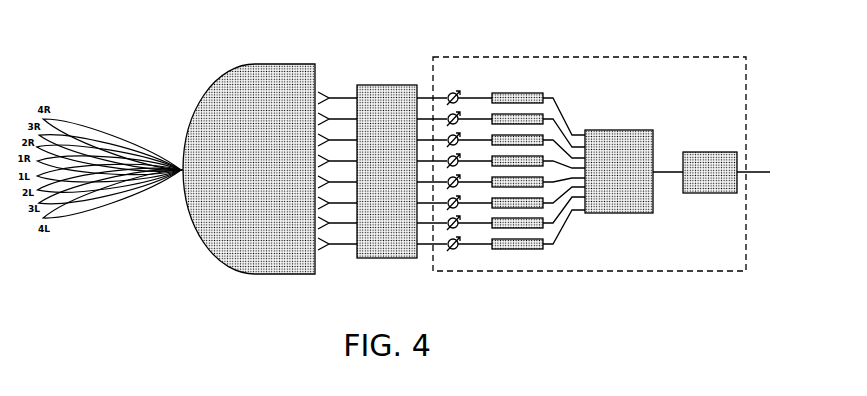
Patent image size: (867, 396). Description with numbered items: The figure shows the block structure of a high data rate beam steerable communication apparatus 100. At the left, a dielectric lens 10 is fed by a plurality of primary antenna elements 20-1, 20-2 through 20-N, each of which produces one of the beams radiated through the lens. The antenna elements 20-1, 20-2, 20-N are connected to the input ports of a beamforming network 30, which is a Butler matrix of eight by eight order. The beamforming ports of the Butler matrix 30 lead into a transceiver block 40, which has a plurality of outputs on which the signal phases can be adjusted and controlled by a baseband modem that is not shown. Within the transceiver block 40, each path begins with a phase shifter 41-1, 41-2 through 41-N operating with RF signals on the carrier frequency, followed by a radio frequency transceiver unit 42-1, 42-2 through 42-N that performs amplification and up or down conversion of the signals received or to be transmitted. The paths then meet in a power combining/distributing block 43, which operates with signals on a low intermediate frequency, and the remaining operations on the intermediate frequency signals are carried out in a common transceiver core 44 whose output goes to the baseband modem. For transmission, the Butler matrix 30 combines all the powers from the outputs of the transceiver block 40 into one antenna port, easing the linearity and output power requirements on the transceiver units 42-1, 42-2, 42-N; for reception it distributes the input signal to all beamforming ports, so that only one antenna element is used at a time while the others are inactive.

The communication apparatus 100 is at (450, 26).
The dielectric lens 10 is at (249, 169).
The antenna element 20-1 is at (337, 93).
The antenna element 20-2 is at (337, 114).
The antenna element 20-N is at (337, 239).
The beamforming network 30 is at (383, 85).
The transceiver block 40 is at (589, 164).
The phase shifter 41-1 is at (467, 96).
The phase shifter 41-2 is at (467, 117).
The phase shifter 41-N is at (467, 242).
The radio frequency transceiver unit 42-1 is at (517, 98).
The radio frequency transceiver unit 42-2 is at (517, 119).
The radio frequency transceiver unit 42-N is at (517, 244).
The power combining/distributing block 43 is at (619, 171).
The transceiver core 44 is at (710, 172).